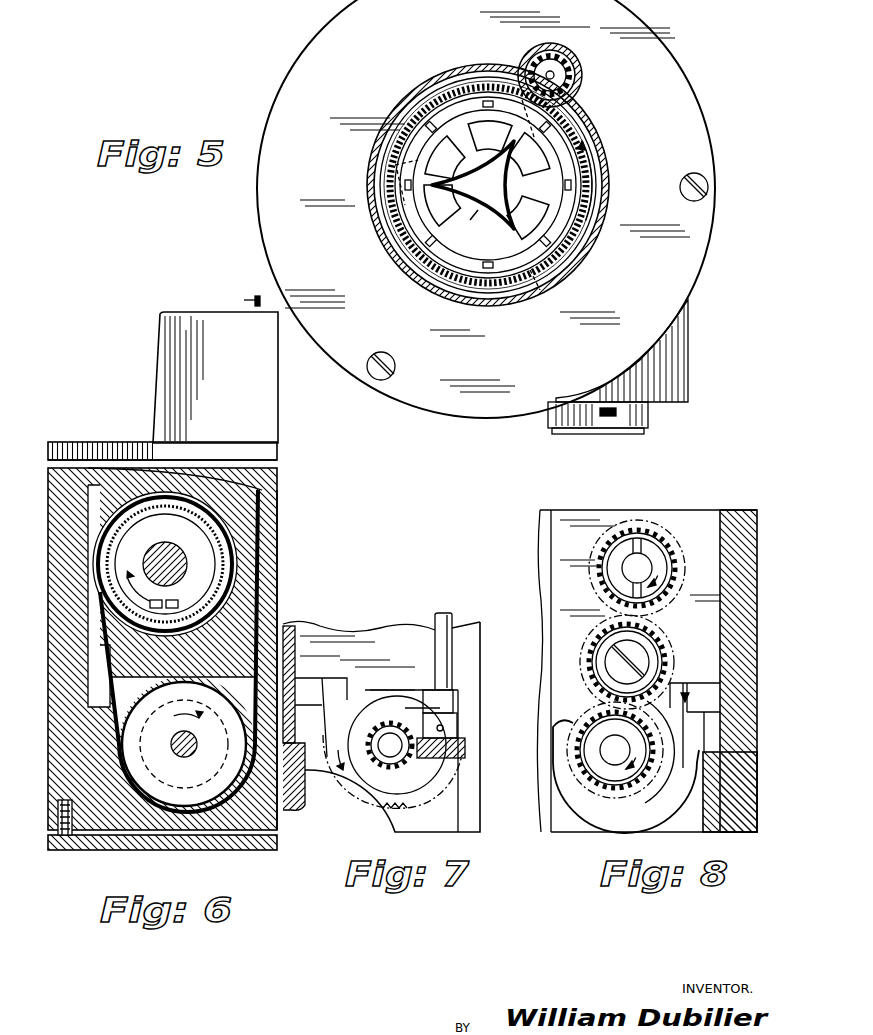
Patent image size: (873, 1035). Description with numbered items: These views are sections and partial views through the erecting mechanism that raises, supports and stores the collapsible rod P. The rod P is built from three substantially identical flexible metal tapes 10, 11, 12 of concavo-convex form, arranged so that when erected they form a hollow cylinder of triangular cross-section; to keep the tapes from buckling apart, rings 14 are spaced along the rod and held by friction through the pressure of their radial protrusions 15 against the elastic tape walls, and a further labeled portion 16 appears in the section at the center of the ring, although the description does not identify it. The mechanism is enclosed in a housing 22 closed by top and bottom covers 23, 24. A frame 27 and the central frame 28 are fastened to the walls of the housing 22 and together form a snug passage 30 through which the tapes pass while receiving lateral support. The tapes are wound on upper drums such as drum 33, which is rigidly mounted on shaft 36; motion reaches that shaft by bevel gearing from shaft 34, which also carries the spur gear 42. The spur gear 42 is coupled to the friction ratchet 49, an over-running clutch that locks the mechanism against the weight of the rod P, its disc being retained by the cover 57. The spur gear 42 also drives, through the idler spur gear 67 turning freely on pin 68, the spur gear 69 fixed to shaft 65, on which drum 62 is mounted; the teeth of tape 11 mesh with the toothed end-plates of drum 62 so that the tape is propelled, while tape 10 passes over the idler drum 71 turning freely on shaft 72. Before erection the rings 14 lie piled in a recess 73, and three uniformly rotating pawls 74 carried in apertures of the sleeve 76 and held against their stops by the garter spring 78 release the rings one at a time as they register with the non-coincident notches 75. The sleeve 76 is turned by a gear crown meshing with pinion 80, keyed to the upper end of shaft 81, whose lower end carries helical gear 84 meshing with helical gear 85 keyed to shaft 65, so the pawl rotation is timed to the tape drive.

In FIG. 5, the flexible metal tape 10 is at (468, 196).
In FIG. 6, the flexible metal tape 10 is at (278, 500).
In FIG. 5, the flexible metal tape 11 is at (508, 153).
In FIG. 7, the flexible metal tape 11 is at (322, 689).
In FIG. 8, the flexible metal tape 11 is at (685, 723).
In FIG. 5, the flexible metal tape 12 is at (490, 136).
In FIG. 5, the ring 14 is at (470, 118).
In FIG. 5, the radial protrusion 15 is at (518, 190).
In FIG. 5, the slot 16 is at (462, 160).
In FIG. 6, the housing 22 is at (48, 830).
In FIG. 8, the housing 22 is at (748, 650).
In FIG. 5, the top cover 23 is at (690, 126).
In FIG. 6, the top cover 23 is at (75, 444).
In FIG. 6, the bottom cover 24 is at (234, 850).
In FIG. 6, the frame 27 is at (245, 618).
In FIG. 6, the central frame 28 is at (268, 562).
In FIG. 6, the passage 30 is at (278, 524).
In FIG. 6, the upper drum 33 is at (149, 538).
In FIG. 8, the shaft 34 is at (640, 563).
In FIG. 6, the shaft 36 is at (155, 582).
In FIG. 8, the spur gear 42 is at (684, 560).
In FIG. 5, the friction ratchet 49 is at (678, 428).
In FIG. 5, the cover 57 is at (690, 404).
In FIG. 7, the drum 62 is at (367, 797).
In FIG. 8, the drum 62 is at (648, 800).
In FIG. 8, the shaft 65 is at (607, 762).
In FIG. 8, the idler spur gear 67 is at (660, 640).
In FIG. 8, the pin 68 is at (642, 661).
In FIG. 8, the spur gear 69 is at (596, 722).
In FIG. 6, the idler drum 71 is at (148, 792).
In FIG. 6, the shaft 72 is at (183, 730).
In FIG. 5, the recess 73 is at (530, 152).
In FIG. 5, the pawl 74 is at (500, 75).
In FIG. 5, the notch 75 is at (595, 140).
In FIG. 5, the sleeve 76 is at (580, 240).
In FIG. 5, the garter spring 78 is at (604, 168).
In FIG. 5, the pinion 80 is at (580, 65).
In FIG. 7, the shaft 81 is at (447, 655).
In FIG. 7, the helical gear 84 is at (465, 747).
In FIG. 7, the helical gear 85 is at (388, 730).
In FIG. 5, the collapsible rod P is at (473, 193).